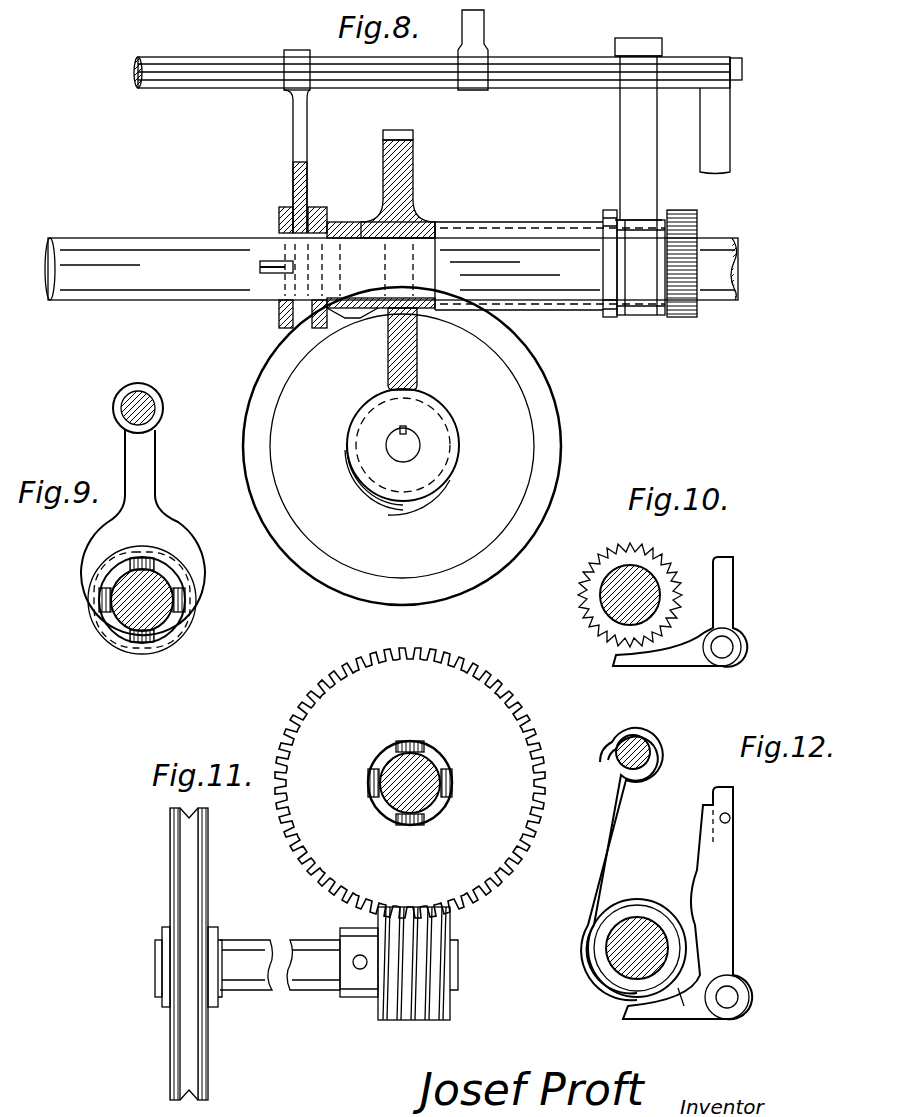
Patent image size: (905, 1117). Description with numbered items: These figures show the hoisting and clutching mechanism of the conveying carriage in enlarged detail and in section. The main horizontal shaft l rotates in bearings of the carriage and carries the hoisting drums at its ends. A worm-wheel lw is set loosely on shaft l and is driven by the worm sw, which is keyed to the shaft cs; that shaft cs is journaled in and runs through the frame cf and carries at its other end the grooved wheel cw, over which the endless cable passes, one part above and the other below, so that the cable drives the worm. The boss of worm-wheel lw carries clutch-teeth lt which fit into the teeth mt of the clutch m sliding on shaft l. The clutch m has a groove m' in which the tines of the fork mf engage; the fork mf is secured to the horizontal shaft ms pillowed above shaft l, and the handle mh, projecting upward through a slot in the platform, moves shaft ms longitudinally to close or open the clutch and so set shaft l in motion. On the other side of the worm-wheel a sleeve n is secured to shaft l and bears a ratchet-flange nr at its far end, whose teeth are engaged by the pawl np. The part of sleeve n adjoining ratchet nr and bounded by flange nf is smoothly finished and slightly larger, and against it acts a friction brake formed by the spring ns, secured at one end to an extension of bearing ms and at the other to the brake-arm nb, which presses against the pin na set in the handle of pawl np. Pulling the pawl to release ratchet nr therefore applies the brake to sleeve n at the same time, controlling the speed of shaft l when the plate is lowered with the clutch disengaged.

In FIG. 8, the horizontal shaft ms is at (538, 78).
In FIG. 9, the horizontal shaft ms is at (158, 407).
In FIG. 12, the horizontal shaft ms is at (650, 755).
In FIG. 8, the handle mh is at (483, 28).
In FIG. 8, the fork mf is at (308, 165).
In FIG. 9, the fork mf is at (165, 537).
In FIG. 8, the clutch m is at (318, 263).
In FIG. 9, the clutch m is at (168, 603).
In FIG. 8, the groove m' is at (262, 325).
In FIG. 8, the clutch teeth mt is at (372, 312).
In FIG. 9, the clutch teeth mt is at (142, 645).
In FIG. 8, the worm-wheel lw is at (416, 176).
In FIG. 11, the worm-wheel lw is at (410, 783).
In FIG. 8, the clutch-teeth lt is at (336, 270).
In FIG. 11, the clutch-teeth lt is at (433, 768).
In FIG. 8, the horizontal shaft l is at (391, 269).
In FIG. 9, the horizontal shaft l is at (170, 625).
In FIG. 10, the horizontal shaft l is at (612, 598).
In FIG. 11, the horizontal shaft l is at (425, 795).
In FIG. 12, the horizontal shaft l is at (612, 955).
In FIG. 8, the sleeve n is at (506, 236).
In FIG. 12, the sleeve n is at (612, 985).
In FIG. 8, the spring ns is at (652, 332).
In FIG. 12, the spring ns is at (608, 848).
In FIG. 8, the flange nf is at (609, 318).
In FIG. 8, the ratchet-flange nr is at (690, 318).
In FIG. 10, the ratchet-flange nr is at (662, 568).
In FIG. 10, the pawl np is at (733, 592).
In FIG. 12, the pawl np is at (735, 928).
In FIG. 12, the pin na is at (731, 818).
In FIG. 12, the brake-arm nb is at (680, 1006).
In FIG. 8, the frame cf is at (727, 135).
In FIG. 8, the grooved wheel cw is at (562, 452).
In FIG. 11, the grooved wheel cw is at (170, 853).
In FIG. 8, the shaft cs is at (403, 444).
In FIG. 11, the shaft cs is at (240, 985).
In FIG. 8, the worm sw is at (402, 452).
In FIG. 11, the worm sw is at (403, 1014).